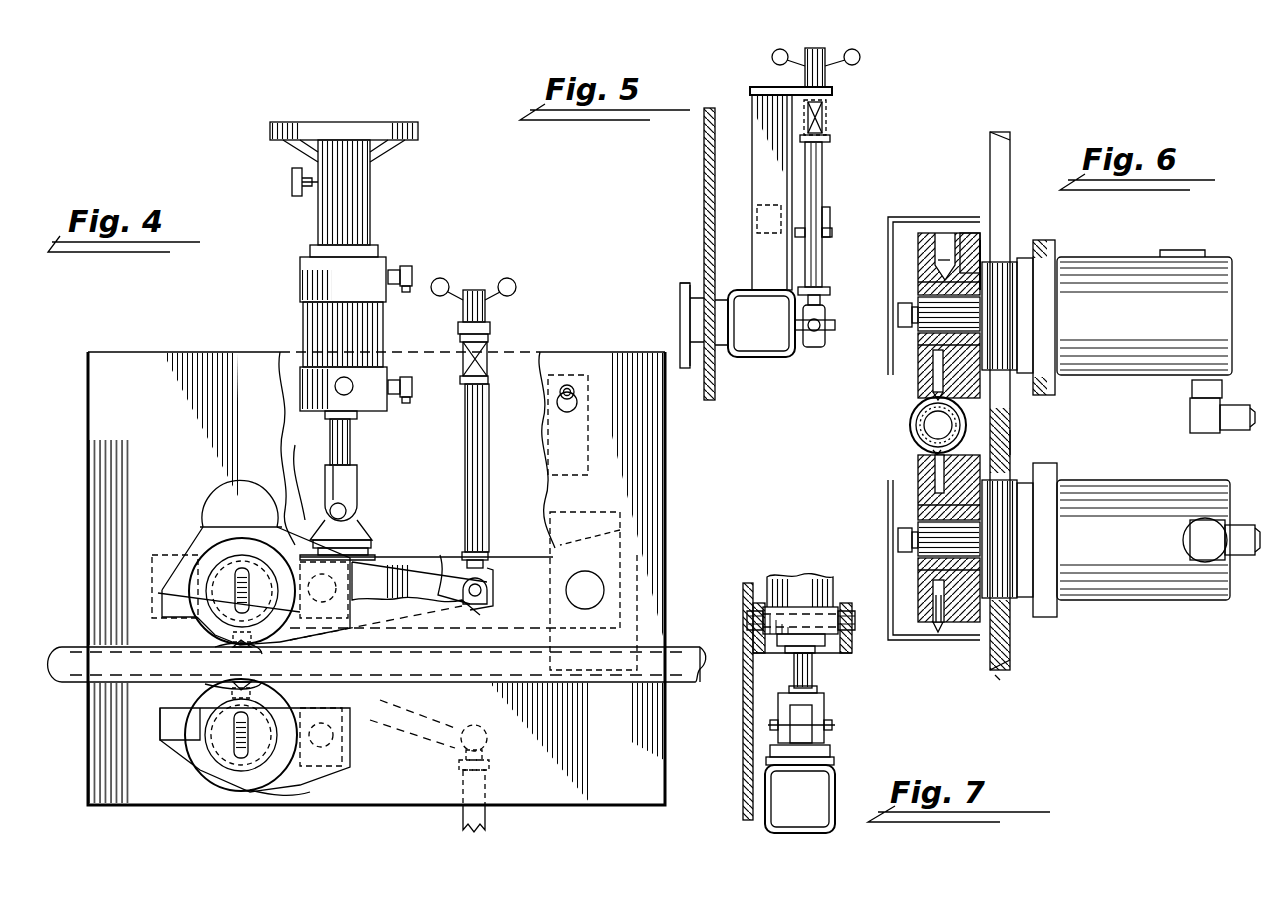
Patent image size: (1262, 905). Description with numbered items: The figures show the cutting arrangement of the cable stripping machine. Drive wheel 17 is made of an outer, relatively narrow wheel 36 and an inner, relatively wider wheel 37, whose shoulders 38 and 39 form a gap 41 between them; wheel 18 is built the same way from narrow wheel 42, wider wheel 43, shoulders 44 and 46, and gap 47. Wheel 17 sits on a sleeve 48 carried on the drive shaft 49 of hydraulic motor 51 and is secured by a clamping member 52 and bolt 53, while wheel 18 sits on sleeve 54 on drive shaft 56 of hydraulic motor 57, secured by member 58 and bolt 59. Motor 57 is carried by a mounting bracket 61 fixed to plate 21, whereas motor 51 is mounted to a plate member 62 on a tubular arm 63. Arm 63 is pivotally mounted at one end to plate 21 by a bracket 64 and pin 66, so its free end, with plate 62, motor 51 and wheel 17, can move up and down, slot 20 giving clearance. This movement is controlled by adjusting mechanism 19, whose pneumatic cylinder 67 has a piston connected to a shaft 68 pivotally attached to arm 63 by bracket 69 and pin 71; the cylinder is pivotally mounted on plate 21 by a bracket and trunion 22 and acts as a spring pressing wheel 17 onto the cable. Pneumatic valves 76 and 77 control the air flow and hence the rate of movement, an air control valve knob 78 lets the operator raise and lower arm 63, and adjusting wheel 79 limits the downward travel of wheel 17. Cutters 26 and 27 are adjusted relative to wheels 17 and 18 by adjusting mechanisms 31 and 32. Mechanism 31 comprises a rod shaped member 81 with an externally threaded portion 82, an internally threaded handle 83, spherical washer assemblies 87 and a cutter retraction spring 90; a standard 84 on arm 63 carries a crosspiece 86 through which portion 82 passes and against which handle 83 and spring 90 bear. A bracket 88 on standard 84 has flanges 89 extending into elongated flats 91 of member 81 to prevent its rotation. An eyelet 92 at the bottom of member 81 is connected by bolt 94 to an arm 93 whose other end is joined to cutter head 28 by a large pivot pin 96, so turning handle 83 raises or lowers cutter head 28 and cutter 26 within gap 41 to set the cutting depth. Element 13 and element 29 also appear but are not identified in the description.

In FIG. 4, the mounting plate 13 is at (688, 682).
In FIG. 6, the mounting plate 13 is at (1012, 393).
In FIG. 4, the drive wheel 17 is at (210, 540).
In FIG. 6, the drive wheel 17 is at (932, 398).
In FIG. 4, the wheel 18 is at (200, 742).
In FIG. 6, the wheel 18 is at (925, 478).
In FIG. 4, the adjusting mechanism 19 is at (322, 214).
In FIG. 4, the slot 20 is at (300, 448).
In FIG. 6, the slot 20 is at (1015, 418).
In FIG. 4, the plate 21 is at (635, 492).
In FIG. 5, the plate 21 is at (703, 128).
In FIG. 6, the plate 21 is at (1003, 676).
In FIG. 7, the plate 21 is at (742, 757).
In FIG. 4, the trunion 22 is at (375, 350).
In FIG. 7, the trunion 22 is at (745, 618).
In FIG. 4, the cutter 26 is at (222, 655).
In FIG. 5, the cutter 26 is at (688, 372).
In FIG. 6, the cutter 26 is at (918, 422).
In FIG. 4, the cutter 27 is at (118, 680).
In FIG. 6, the cutter 27 is at (925, 462).
In FIG. 4, the cutter head 28 is at (168, 578).
In FIG. 5, the cutter head 28 is at (683, 286).
In FIG. 6, the cutter head 28 is at (912, 235).
In FIG. 4, the lower roller 29 is at (318, 778).
In FIG. 6, the lower roller 29 is at (933, 625).
In FIG. 4, the adjusting mechanism 31 is at (492, 305).
In FIG. 4, the adjusting mechanism 32 is at (488, 816).
In FIG. 6, the outer narrow wheel 36 is at (935, 225).
In FIG. 6, the inner wider wheel 37 is at (954, 222).
In FIG. 6, the shoulder 38 is at (936, 262).
In FIG. 6, the shoulder 39 is at (985, 245).
In FIG. 6, the gap 41 is at (930, 365).
In FIG. 6, the narrow wheel 42 is at (928, 598).
In FIG. 6, the wider wheel 43 is at (1012, 642).
In FIG. 6, the shoulder 44 is at (935, 628).
In FIG. 6, the shoulder 46 is at (942, 628).
In FIG. 6, the gap 47 is at (918, 510).
In FIG. 6, the sleeve 48 is at (925, 345).
In FIG. 6, the drive shaft 49 is at (918, 330).
In FIG. 6, the hydraulic motor 51 is at (1132, 258).
In FIG. 4, the clamping member 52 is at (232, 622).
In FIG. 6, the clamping member 52 is at (898, 312).
In FIG. 6, the bolt 53 is at (912, 318).
In FIG. 6, the sleeve 54 is at (898, 535).
In FIG. 6, the drive shaft 56 is at (922, 558).
In FIG. 6, the hydraulic motor 57 is at (1115, 482).
In FIG. 6, the clamping member 58 is at (918, 550).
In FIG. 6, the bolt 59 is at (912, 540).
In FIG. 6, the mounting bracket 61 is at (1040, 610).
In FIG. 4, the plate member 62 is at (228, 502).
In FIG. 6, the plate member 62 is at (1035, 248).
In FIG. 4, the tubular arm 63 is at (440, 552).
In FIG. 5, the tubular arm 63 is at (760, 335).
In FIG. 7, the tubular arm 63 is at (766, 790).
In FIG. 4, the bracket 64 is at (628, 532).
In FIG. 4, the pin 66 is at (600, 588).
In FIG. 4, the pneumatic cylinder 67 is at (300, 306).
In FIG. 4, the shaft 68 is at (350, 440).
In FIG. 7, the shaft 68 is at (812, 672).
In FIG. 4, the bracket 69 is at (362, 532).
In FIG. 7, the bracket 69 is at (832, 754).
In FIG. 4, the pin 71 is at (345, 508).
In FIG. 7, the pin 71 is at (828, 726).
In FIG. 4, the pneumatic valve 76 is at (410, 274).
In FIG. 4, the pneumatic valve 77 is at (410, 396).
In FIG. 4, the air control valve knob 78 is at (570, 398).
In FIG. 4, the adjusting wheel 79 is at (358, 122).
In FIG. 4, the rod shaped member 81 is at (490, 432).
In FIG. 5, the rod shaped member 81 is at (826, 174).
In FIG. 5, the externally threaded portion 82 is at (830, 125).
In FIG. 4, the internally threaded handle 83 is at (513, 290).
In FIG. 5, the internally threaded handle 83 is at (860, 58).
In FIG. 5, the standard 84 is at (755, 170).
In FIG. 4, the crosspiece 86 is at (492, 333).
In FIG. 5, the crosspiece 86 is at (775, 92).
In FIG. 5, the spherical washer assemblies 87 is at (832, 96).
In FIG. 5, the bracket 88 is at (832, 212).
In FIG. 5, the flanges 89 is at (822, 288).
In FIG. 4, the cutter retraction spring 90 is at (490, 366).
In FIG. 5, the cutter retraction spring 90 is at (828, 115).
In FIG. 5, the elongated flats 91 is at (834, 232).
In FIG. 4, the eyelet 92 is at (497, 562).
In FIG. 5, the eyelet 92 is at (826, 316).
In FIG. 4, the arm 93 is at (415, 585).
In FIG. 5, the arm 93 is at (812, 347).
In FIG. 5, the bolt 94 is at (838, 330).
In FIG. 4, the large pivot pin 96 is at (372, 557).
In FIG. 5, the large pivot pin 96 is at (688, 370).